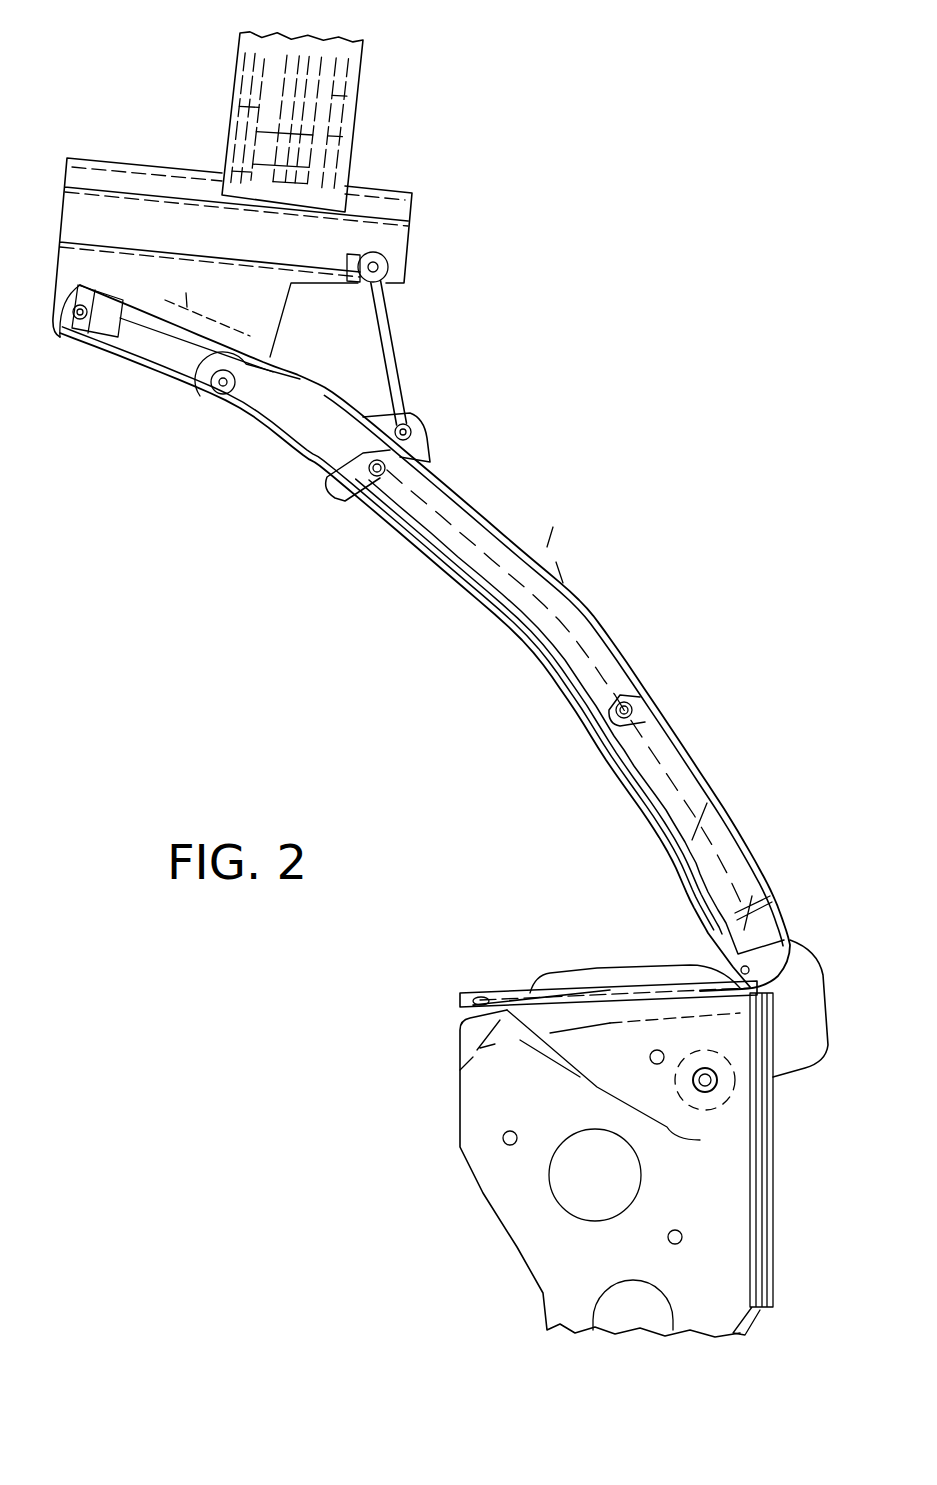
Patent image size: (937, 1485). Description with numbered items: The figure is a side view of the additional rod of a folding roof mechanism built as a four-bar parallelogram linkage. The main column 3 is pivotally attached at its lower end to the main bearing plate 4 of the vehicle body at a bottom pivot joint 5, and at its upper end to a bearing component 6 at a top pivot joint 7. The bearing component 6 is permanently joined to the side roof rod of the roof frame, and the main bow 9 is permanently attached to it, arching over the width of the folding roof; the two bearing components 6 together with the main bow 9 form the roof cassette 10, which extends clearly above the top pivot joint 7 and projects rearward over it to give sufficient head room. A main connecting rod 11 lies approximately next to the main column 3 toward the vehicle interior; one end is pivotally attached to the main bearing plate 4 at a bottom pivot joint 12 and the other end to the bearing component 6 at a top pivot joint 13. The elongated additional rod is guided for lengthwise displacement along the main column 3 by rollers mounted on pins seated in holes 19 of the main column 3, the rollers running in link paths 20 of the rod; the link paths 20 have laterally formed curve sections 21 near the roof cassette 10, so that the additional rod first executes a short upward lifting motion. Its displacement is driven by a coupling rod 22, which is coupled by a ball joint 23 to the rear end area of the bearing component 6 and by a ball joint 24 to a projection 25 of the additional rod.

The main column 3 is at (297, 420).
The main bearing plate 4 is at (500, 1103).
The bottom pivot joint 5 is at (717, 1082).
The bearing component 6 is at (186, 297).
The top pivot joint 7 is at (223, 394).
The main bow 9 is at (275, 76).
The roof cassette 10 is at (382, 189).
The main connecting rod 11 is at (310, 372).
The bottom pivot joint 12 is at (570, 987).
The top pivot joint 13 is at (63, 333).
The holes 19 is at (375, 475).
The link paths 20 is at (492, 590).
The curve sections 21 is at (385, 455).
The coupling rod 22 is at (396, 352).
The ball joint 23 is at (390, 266).
The ball joint 24 is at (417, 428).
The projection 25 is at (400, 407).